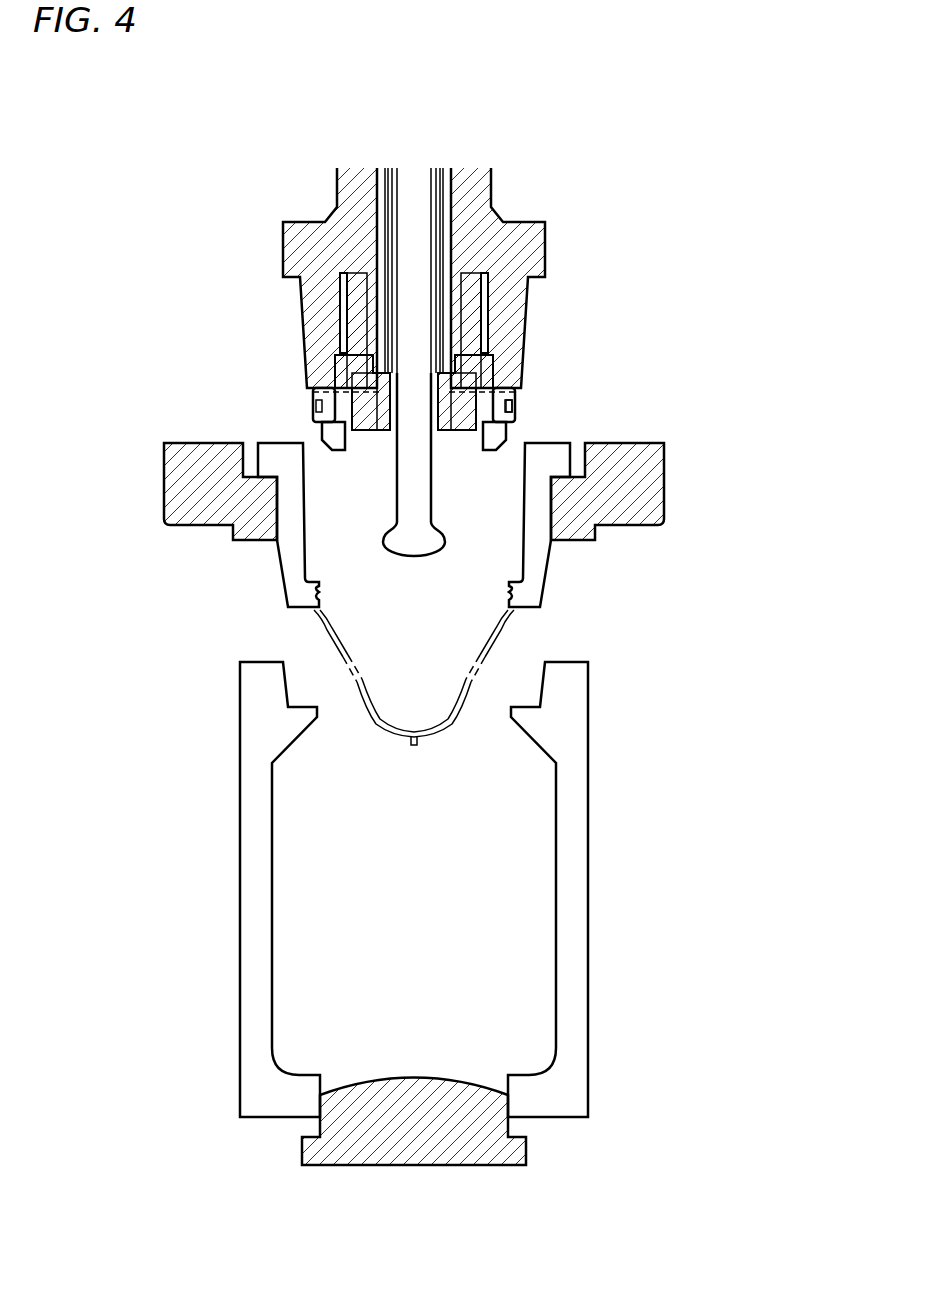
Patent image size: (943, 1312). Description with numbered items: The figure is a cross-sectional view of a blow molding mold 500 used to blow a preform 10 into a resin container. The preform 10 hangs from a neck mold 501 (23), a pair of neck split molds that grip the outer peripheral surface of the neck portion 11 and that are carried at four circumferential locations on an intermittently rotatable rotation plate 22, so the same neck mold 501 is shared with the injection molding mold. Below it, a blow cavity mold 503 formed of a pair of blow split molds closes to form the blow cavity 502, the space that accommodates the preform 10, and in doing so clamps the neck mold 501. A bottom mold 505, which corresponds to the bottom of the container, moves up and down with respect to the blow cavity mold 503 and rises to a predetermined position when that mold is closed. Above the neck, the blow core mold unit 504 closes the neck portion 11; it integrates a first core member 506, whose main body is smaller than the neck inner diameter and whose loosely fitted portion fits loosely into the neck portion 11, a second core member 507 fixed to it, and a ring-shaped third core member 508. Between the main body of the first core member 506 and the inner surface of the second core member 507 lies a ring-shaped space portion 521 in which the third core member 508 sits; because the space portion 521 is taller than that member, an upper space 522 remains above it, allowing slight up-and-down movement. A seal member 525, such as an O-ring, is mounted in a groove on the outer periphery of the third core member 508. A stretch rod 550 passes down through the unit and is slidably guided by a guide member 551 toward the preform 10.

The blow molding mold 500 is at (737, 150).
The blow core mold unit 504 is at (187, 303).
The second core member 507 is at (302, 300).
The third core member 508 is at (305, 387).
The first core member 506 is at (314, 425).
The space portion 521 is at (494, 387).
The upper space 522 is at (414, 401).
The seal member 525 is at (512, 405).
The guide member 551 is at (385, 435).
The stretch rod 550 is at (422, 545).
The rotation plate 22 is at (640, 497).
The neck mold 501 is at (540, 568).
The neck mold 23 is at (414, 525).
The preform 10 is at (492, 652).
The neck portion 11 is at (314, 600).
The blow cavity 502 is at (292, 912).
The blow cavity mold 503 is at (583, 990).
The bottom mold 505 is at (412, 1135).